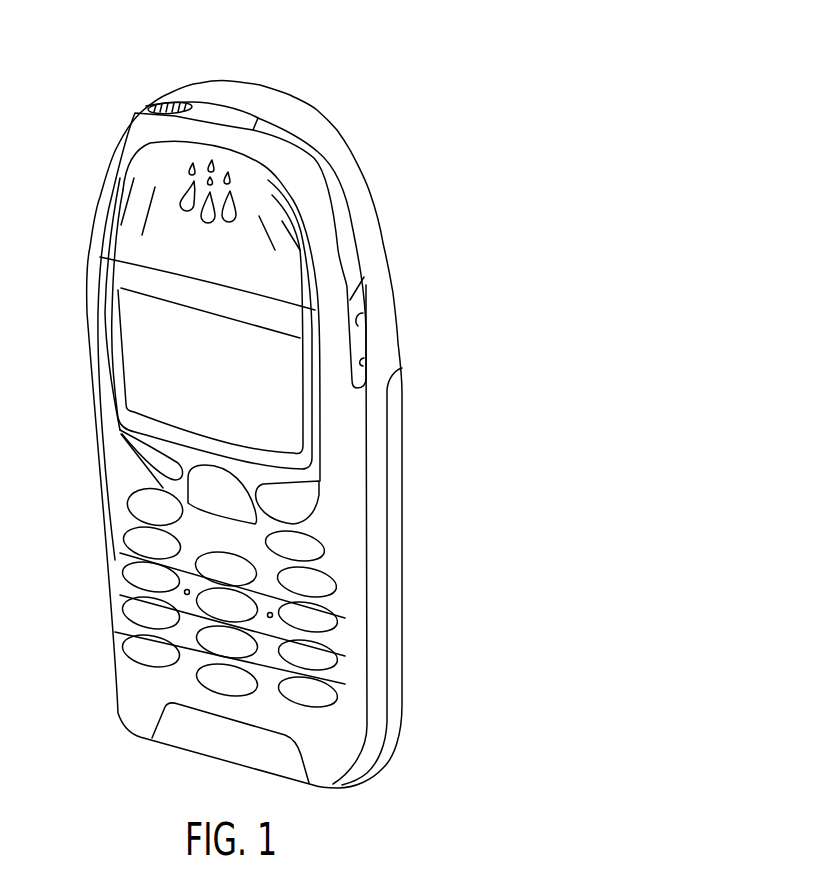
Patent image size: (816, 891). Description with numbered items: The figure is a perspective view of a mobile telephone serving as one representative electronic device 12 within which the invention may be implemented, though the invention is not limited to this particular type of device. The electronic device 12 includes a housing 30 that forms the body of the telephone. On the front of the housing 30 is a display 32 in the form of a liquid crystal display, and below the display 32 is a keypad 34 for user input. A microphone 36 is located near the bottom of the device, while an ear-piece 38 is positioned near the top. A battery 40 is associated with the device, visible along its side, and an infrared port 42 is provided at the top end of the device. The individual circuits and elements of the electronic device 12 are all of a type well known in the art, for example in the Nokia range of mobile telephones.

The electronic device 12 is at (344, 90).
The housing 30 is at (368, 226).
The display 32 is at (283, 410).
The keypad 34 is at (307, 700).
The microphone 36 is at (177, 733).
The ear-piece 38 is at (190, 187).
The battery 40 is at (400, 683).
The infrared port 42 is at (229, 112).